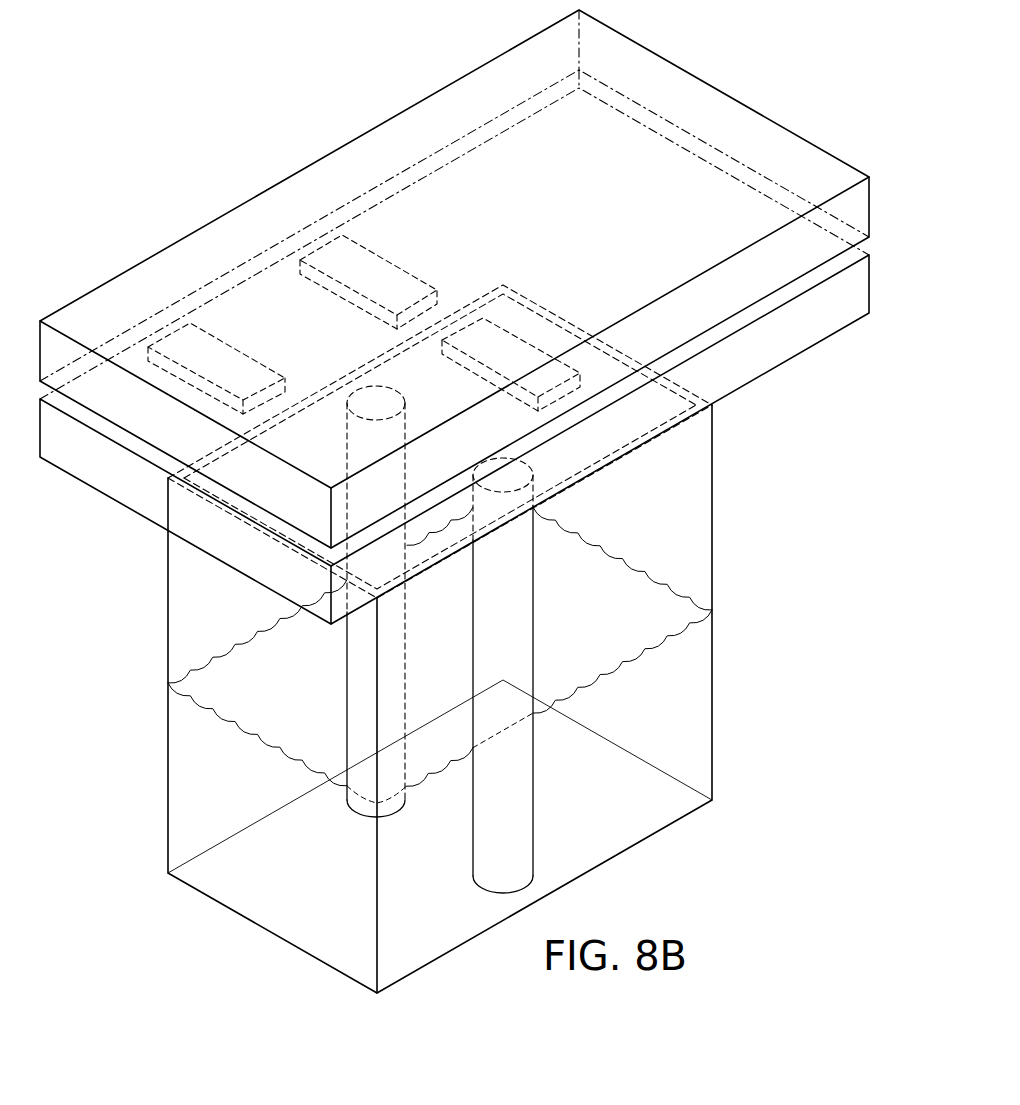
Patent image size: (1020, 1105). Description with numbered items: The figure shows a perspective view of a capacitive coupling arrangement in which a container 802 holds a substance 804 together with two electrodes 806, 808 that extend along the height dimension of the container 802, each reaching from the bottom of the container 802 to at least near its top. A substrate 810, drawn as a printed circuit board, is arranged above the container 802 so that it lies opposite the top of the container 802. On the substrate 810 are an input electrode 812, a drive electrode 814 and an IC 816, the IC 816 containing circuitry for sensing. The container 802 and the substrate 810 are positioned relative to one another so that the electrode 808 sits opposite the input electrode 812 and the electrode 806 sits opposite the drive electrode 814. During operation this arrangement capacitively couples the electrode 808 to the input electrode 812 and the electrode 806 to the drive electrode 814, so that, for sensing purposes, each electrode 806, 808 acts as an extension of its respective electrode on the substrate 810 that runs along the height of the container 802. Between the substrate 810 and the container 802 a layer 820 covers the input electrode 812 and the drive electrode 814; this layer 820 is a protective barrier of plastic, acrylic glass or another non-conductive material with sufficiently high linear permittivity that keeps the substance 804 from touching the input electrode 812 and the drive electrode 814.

The container 802 is at (750, 583).
The substance 804 is at (632, 567).
The electrode 806 is at (347, 665).
The electrode 808 is at (533, 618).
The substrate 810 is at (723, 100).
The input electrode 812 is at (523, 340).
The drive electrode 814 is at (407, 273).
The IC 816 is at (253, 360).
The layer 820 is at (130, 497).